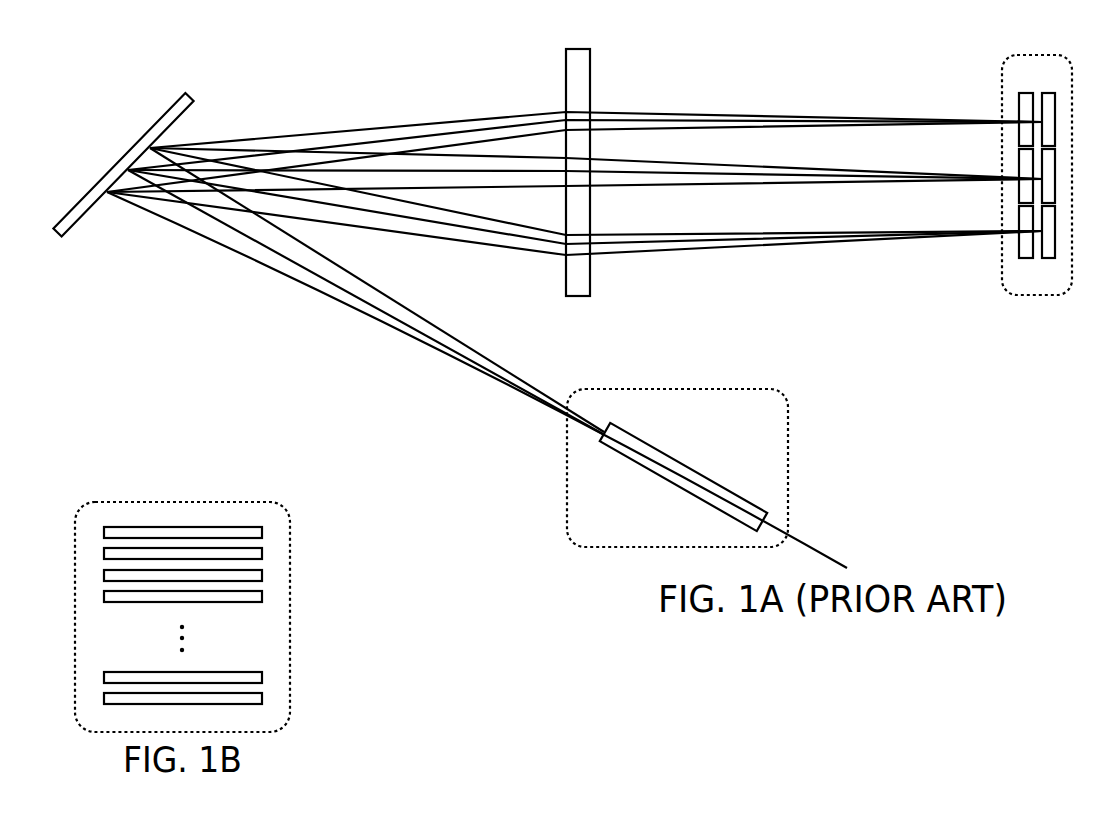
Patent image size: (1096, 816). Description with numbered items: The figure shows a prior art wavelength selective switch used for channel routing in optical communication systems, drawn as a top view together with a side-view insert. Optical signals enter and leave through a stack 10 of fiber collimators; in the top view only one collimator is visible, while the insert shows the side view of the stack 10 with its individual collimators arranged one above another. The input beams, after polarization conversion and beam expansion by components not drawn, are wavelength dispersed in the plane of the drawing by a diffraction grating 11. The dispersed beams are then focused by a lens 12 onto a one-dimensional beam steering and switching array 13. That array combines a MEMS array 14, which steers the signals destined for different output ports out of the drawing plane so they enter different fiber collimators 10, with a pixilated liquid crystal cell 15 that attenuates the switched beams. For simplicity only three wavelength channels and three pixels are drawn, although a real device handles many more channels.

In FIG. 1A, the stack of fiber collimators 10 is at (655, 447).
In FIG. 1B, the stack of fiber collimators 10 is at (118, 527).
In FIG. 1A, the diffraction grating 11 is at (154, 126).
In FIG. 1A, the lens 12 is at (565, 71).
In FIG. 1A, the one-dimensional beam steering and switching array 13 is at (1007, 191).
In FIG. 1A, the MEMS array 14 is at (1046, 92).
In FIG. 1A, the pixilated liquid crystal cell 15 is at (1019, 100).